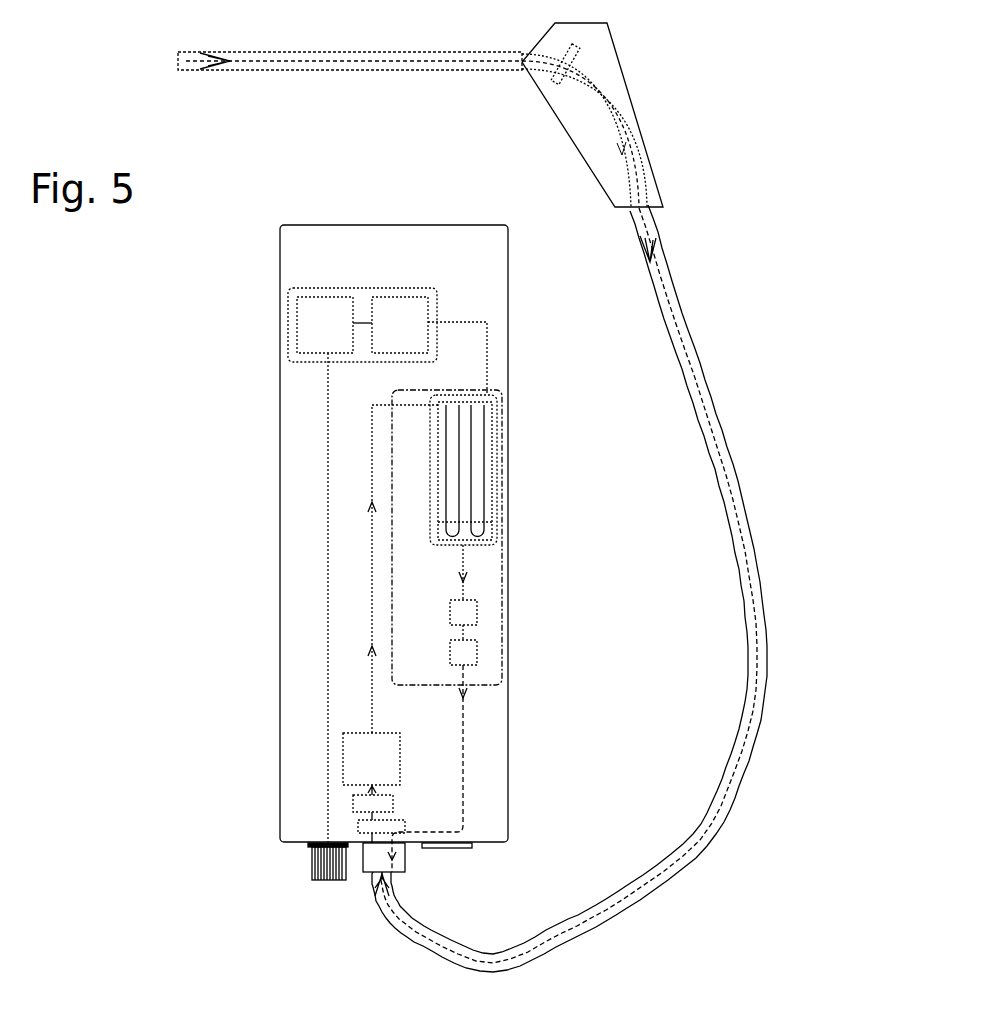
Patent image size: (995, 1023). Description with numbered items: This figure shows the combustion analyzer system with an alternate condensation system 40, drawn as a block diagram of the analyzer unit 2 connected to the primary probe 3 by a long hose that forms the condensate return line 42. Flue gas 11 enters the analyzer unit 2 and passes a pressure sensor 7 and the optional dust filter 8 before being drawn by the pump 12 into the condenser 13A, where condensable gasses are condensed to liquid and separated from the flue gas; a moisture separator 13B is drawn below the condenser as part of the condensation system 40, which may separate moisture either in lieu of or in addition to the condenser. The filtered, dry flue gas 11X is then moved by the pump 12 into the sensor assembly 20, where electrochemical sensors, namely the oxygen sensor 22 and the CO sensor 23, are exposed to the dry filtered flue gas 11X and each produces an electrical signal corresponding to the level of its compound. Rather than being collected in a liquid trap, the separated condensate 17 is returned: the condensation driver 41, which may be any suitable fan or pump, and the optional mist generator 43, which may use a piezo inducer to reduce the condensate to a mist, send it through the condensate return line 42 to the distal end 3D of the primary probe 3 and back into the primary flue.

The analyzer unit 2 is at (497, 239).
The primary probe 3 is at (605, 38).
The distal end 3D is at (183, 47).
The pressure sensor 7 is at (358, 827).
The dust filter 8 is at (353, 804).
The flue gas 11 is at (372, 507).
The dry filtered flue gas 11X is at (326, 433).
The pump 12 is at (343, 749).
The condenser 13A is at (497, 410).
The moisture separator 13B is at (492, 523).
The condensate 17 is at (383, 70).
The sensor assembly 20 is at (324, 293).
The oxygen sensor 22 is at (423, 305).
The CO sensor 23 is at (297, 307).
The condensation system 40 is at (502, 483).
The condensate driver 41 is at (477, 612).
The condensate return line 42 is at (448, 70).
The mist generator 43 is at (477, 652).